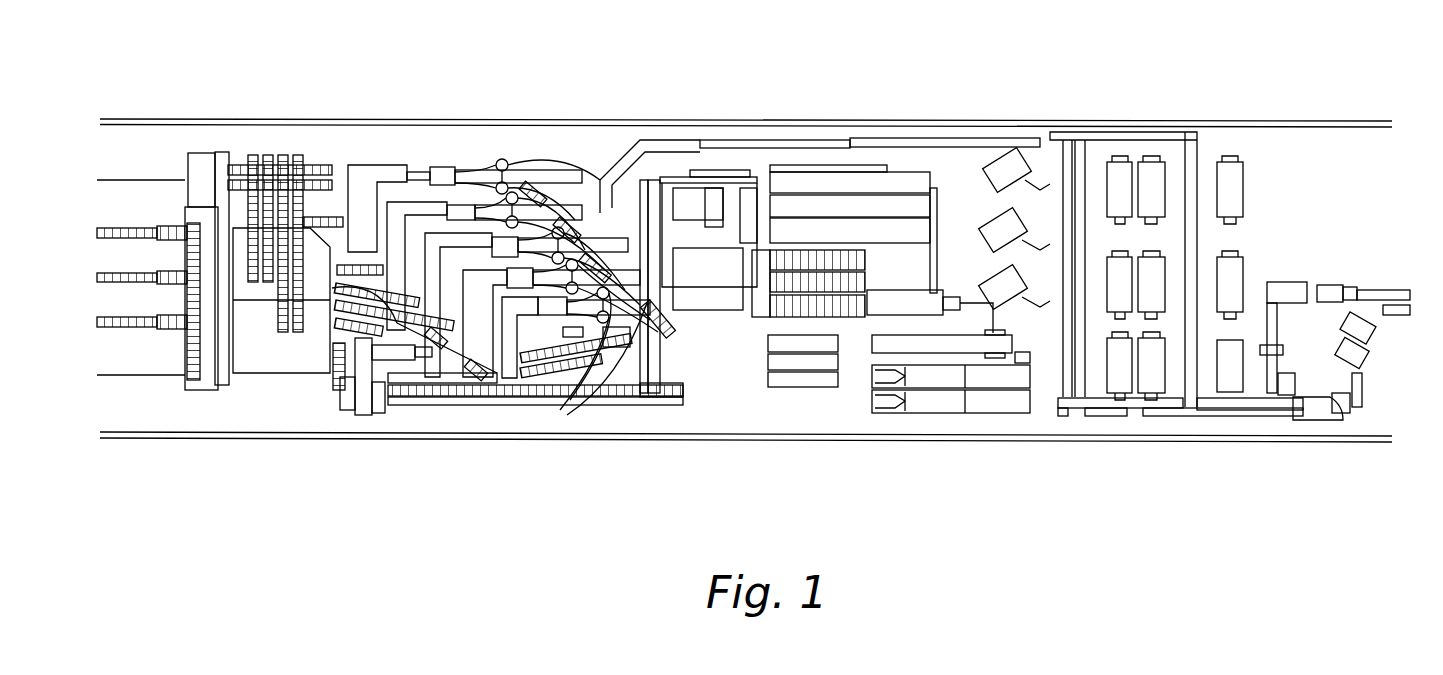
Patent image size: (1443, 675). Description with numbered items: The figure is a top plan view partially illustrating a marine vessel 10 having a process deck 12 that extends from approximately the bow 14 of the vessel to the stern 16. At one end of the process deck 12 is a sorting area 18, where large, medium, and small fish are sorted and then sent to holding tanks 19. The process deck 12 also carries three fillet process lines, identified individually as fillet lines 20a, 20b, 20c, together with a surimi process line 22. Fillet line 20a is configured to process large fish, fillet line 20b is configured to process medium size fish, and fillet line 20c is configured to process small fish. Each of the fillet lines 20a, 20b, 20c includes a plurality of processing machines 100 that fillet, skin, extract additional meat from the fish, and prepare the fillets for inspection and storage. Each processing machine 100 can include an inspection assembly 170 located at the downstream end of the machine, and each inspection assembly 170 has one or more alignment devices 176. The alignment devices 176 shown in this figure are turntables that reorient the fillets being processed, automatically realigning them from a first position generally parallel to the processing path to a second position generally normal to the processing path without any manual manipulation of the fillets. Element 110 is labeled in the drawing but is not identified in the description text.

The marine vessel 10 is at (693, 440).
The process deck 12 is at (313, 420).
The bow 14 is at (1422, 105).
The stern 16 is at (92, 102).
The sorting area 18 is at (165, 395).
The holding tanks 19 is at (240, 262).
The fillet line 20a is at (415, 163).
The fillet line 20b is at (505, 236).
The fillet line 20c is at (522, 332).
The surimi process line 22 is at (740, 348).
The processing machine 100 is at (343, 162).
The valve block 110 is at (360, 165).
The inspection assembly 170 is at (490, 150).
The alignment device 176 is at (540, 195).